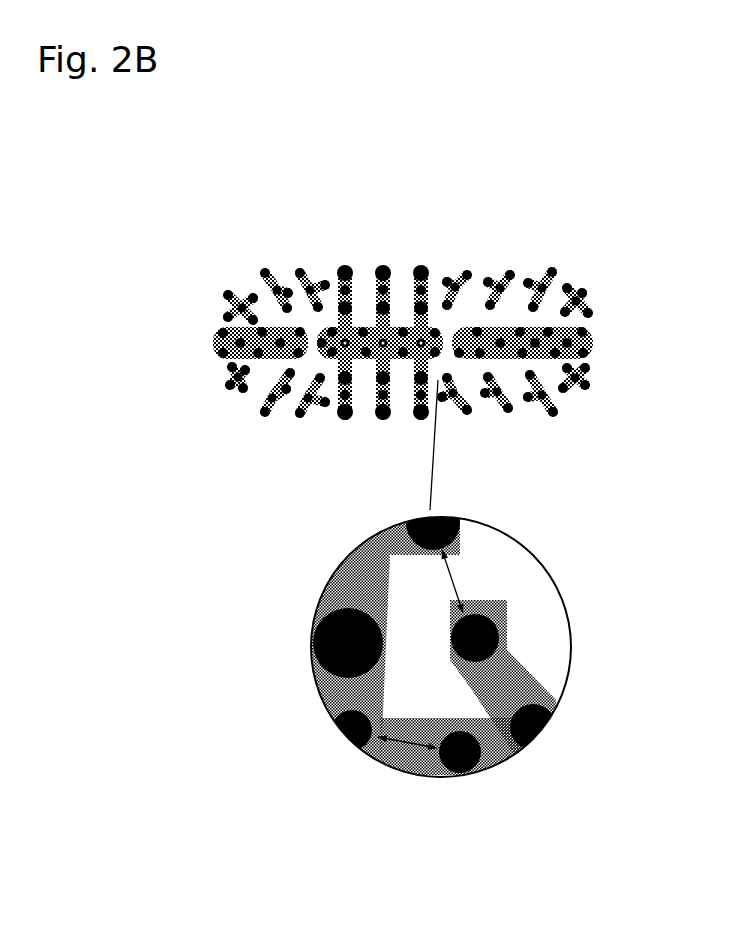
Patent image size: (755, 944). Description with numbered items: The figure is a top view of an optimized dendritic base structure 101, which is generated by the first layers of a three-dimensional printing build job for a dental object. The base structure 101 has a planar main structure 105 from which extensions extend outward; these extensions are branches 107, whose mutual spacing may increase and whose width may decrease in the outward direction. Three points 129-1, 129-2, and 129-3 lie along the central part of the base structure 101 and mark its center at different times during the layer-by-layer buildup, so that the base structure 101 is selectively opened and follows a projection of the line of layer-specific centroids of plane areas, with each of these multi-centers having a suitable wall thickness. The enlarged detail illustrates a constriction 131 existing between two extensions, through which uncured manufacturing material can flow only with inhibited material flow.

The dendritic base structure 101 is at (302, 203).
The planar main structure 105 is at (213, 340).
The branch 107 is at (467, 268).
The point 129-1 is at (342, 350).
The point 129-2 is at (381, 348).
The point 129-3 is at (421, 350).
The constriction 131 is at (452, 577).